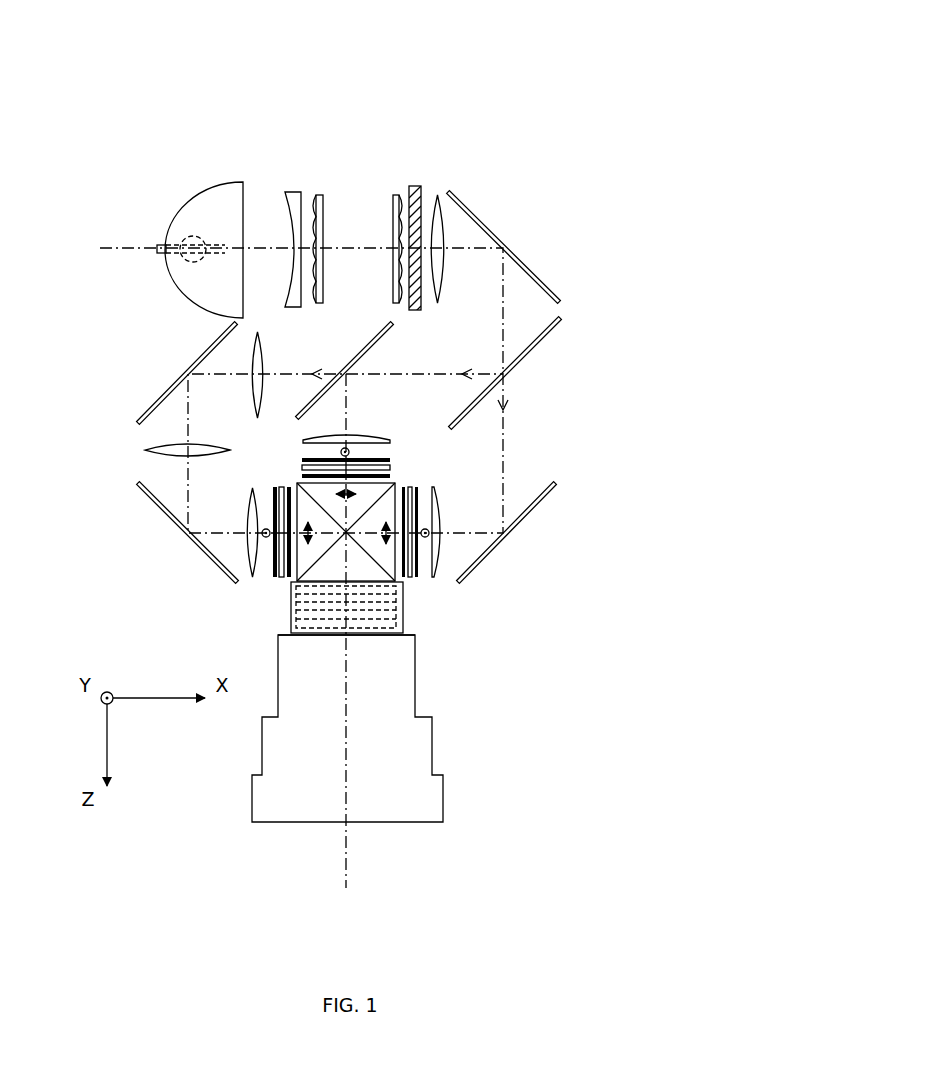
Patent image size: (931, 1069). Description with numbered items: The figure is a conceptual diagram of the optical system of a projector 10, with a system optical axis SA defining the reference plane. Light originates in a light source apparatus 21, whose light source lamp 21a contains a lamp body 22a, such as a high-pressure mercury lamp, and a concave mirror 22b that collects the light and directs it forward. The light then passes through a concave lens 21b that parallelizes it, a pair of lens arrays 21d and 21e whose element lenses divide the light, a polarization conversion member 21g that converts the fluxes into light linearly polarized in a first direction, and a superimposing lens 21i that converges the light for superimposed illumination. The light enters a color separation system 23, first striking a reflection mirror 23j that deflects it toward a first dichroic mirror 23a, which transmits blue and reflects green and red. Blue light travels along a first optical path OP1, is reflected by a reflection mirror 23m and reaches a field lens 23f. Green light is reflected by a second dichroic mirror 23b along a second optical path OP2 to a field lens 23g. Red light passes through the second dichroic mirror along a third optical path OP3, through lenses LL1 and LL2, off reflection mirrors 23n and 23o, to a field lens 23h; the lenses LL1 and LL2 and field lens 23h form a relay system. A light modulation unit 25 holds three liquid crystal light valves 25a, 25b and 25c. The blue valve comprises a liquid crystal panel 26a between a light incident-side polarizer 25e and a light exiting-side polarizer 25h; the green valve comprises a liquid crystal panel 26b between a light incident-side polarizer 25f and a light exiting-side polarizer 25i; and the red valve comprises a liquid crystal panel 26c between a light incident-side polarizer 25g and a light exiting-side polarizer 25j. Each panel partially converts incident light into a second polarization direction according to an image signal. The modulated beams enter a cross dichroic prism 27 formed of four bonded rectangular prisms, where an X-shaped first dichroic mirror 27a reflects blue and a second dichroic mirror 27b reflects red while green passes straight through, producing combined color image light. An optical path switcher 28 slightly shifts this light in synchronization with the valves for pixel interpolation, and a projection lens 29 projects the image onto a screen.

The projector 10 is at (640, 28).
The light source apparatus 21 is at (145, 138).
The light source lamp 21a is at (210, 195).
The concave lens 21b is at (290, 195).
The lens array 21d is at (318, 195).
The lens array 21e is at (395, 195).
The polarization conversion member 21g is at (415, 186).
The superimposing lens 21i is at (437, 195).
The lamp body 22a is at (185, 238).
The concave mirror 22b is at (187, 208).
The color separation system 23 is at (166, 358).
The first dichroic mirror 23a is at (540, 345).
The second dichroic mirror 23b is at (380, 345).
The field lens 23f is at (440, 547).
The field lens 23g is at (390, 440).
The field lens 23h is at (253, 517).
The reflection mirror 23j is at (487, 225).
The reflection mirror 23m is at (543, 500).
The reflection mirror 23n is at (163, 397).
The reflection mirror 23o is at (160, 505).
The first lens LL1 is at (263, 349).
The second lens LL2 is at (150, 447).
The system optical axis SA is at (353, 247).
The first optical path OP1 is at (505, 465).
The second optical path OP2 is at (348, 407).
The third optical path OP3 is at (186, 470).
The light modulation unit 25 is at (432, 585).
The liquid crystal light valve 25a is at (429, 558).
The liquid crystal light valve 25b is at (455, 435).
The liquid crystal light valve 25c is at (257, 584).
The light incident-side polarizer 25e is at (419, 486).
The light incident-side polarizer 25f is at (303, 441).
The light incident-side polarizer 25g is at (285, 560).
The light exiting-side polarizer 25h is at (404, 487).
The light exiting-side polarizer 25i is at (302, 468).
The light exiting-side polarizer 25j is at (255, 578).
The liquid crystal panel 26a is at (415, 514).
The liquid crystal panel 26b is at (392, 466).
The liquid crystal panel 26c is at (277, 548).
The cross dichroic prism 27 is at (287, 585).
The first dichroic mirror 27a is at (292, 590).
The second dichroic mirror 27b is at (395, 592).
The optical path switcher 28 is at (400, 638).
The projection lens 29 is at (393, 745).